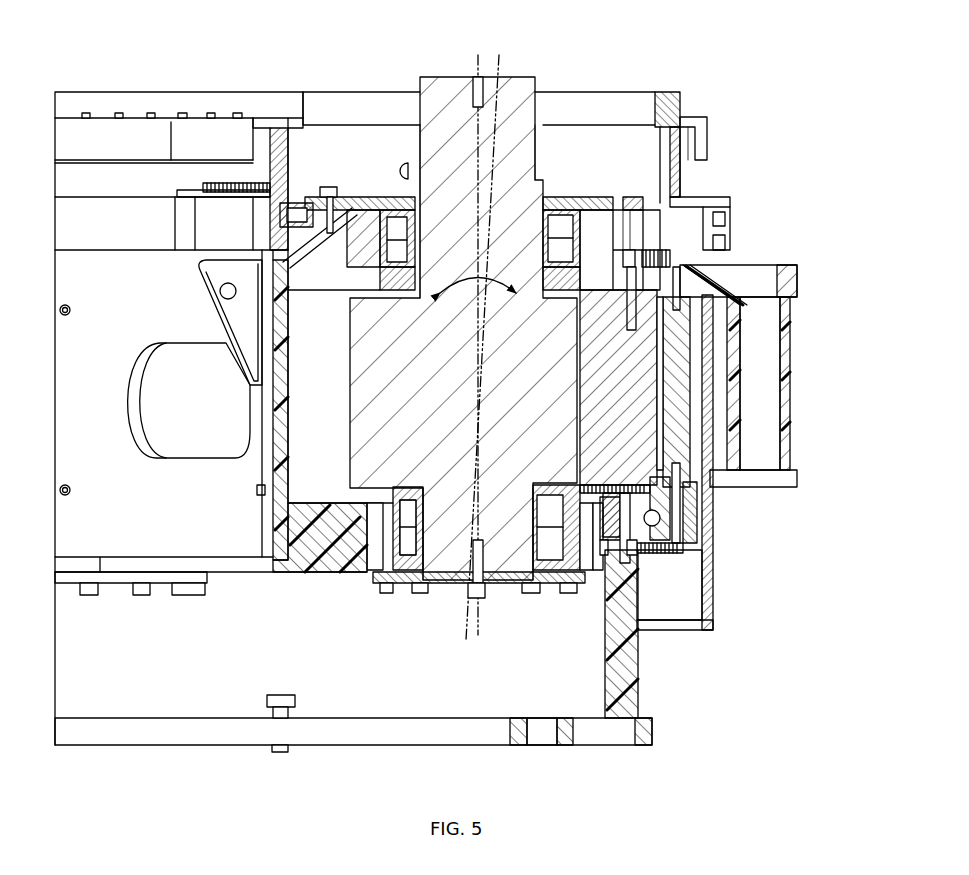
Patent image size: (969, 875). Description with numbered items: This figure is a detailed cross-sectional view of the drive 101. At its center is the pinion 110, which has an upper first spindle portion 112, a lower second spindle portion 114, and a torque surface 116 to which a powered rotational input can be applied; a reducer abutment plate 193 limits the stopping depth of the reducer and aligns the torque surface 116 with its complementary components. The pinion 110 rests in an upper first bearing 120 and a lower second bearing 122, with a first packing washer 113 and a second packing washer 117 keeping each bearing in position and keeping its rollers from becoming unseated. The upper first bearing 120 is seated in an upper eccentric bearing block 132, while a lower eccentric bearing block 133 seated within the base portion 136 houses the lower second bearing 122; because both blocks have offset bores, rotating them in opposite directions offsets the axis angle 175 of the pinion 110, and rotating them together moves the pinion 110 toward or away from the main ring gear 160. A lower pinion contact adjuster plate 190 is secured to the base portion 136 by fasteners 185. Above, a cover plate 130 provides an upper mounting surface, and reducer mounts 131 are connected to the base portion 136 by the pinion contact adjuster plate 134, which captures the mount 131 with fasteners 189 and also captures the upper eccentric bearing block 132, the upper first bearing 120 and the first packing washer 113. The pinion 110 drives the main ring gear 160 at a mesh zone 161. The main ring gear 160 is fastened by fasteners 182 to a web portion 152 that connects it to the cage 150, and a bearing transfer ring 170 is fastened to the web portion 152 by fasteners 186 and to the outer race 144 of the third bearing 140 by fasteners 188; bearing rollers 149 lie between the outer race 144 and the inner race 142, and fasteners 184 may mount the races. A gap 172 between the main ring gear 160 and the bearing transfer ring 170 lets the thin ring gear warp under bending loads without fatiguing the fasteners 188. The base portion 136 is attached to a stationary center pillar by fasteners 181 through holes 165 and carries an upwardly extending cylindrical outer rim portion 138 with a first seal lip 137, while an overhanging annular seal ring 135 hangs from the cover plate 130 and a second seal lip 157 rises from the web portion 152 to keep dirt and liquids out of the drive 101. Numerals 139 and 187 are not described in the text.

The drive 101 is at (659, 46).
The pinion 110 is at (463, 328).
The upper first spindle portion 112 is at (448, 226).
The first packing washer 113 is at (390, 278).
The lower second spindle portion 114 is at (447, 558).
The torque surface 116 is at (462, 100).
The second packing washer 117 is at (405, 488).
The upper first bearing 120 is at (561, 232).
The lower second bearing 122 is at (410, 552).
The cover plate 130 is at (705, 200).
The reducer mount 131 is at (291, 106).
The upper eccentric bearing block 132 is at (615, 250).
The lower eccentric bearing block 133 is at (378, 549).
The pinion contact adjuster plate 134 is at (600, 197).
The overhanging annular seal ring 135 is at (728, 241).
The base portion 136 is at (353, 624).
The first seal lip 137 is at (713, 302).
The cylindrical outer rim portion 138 is at (689, 549).
The housing wall 139 is at (284, 392).
The third bearing 140 is at (645, 490).
The inner race 142 is at (643, 555).
The outer race 144 is at (691, 553).
The bearing rollers 149 is at (654, 518).
The cage 150 is at (791, 488).
The web portion 152 is at (738, 285).
The second seal lip 157 is at (714, 208).
The main ring gear 160 is at (618, 387).
The mesh zone 161 is at (577, 438).
The holes 165 is at (569, 741).
The bearing transfer ring 170 is at (677, 392).
The gap 172 is at (661, 400).
The axis angle 175 is at (469, 290).
The fasteners 181 is at (275, 705).
The fasteners 182 is at (630, 262).
The fasteners 184 is at (606, 586).
The fasteners 185 is at (577, 592).
The fasteners 186 is at (684, 254).
The bolt 187 is at (283, 214).
The fasteners 188 is at (677, 530).
The fasteners 189 is at (328, 186).
The lower pinion contact adjuster plate 190 is at (502, 586).
The reducer abutment plate 193 is at (540, 172).